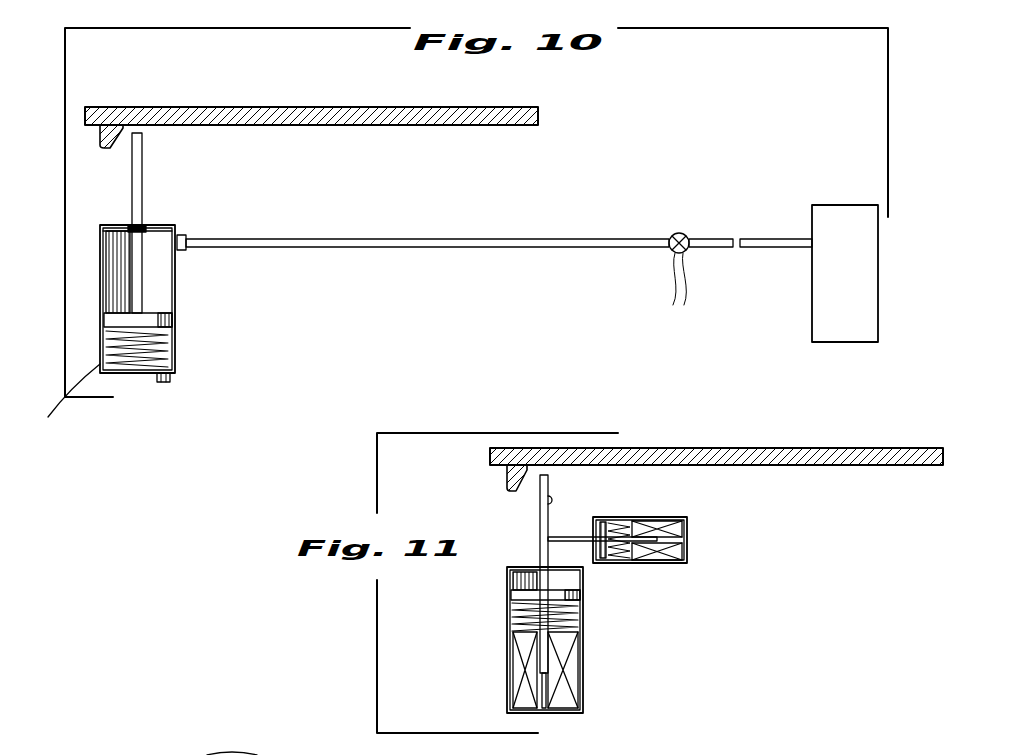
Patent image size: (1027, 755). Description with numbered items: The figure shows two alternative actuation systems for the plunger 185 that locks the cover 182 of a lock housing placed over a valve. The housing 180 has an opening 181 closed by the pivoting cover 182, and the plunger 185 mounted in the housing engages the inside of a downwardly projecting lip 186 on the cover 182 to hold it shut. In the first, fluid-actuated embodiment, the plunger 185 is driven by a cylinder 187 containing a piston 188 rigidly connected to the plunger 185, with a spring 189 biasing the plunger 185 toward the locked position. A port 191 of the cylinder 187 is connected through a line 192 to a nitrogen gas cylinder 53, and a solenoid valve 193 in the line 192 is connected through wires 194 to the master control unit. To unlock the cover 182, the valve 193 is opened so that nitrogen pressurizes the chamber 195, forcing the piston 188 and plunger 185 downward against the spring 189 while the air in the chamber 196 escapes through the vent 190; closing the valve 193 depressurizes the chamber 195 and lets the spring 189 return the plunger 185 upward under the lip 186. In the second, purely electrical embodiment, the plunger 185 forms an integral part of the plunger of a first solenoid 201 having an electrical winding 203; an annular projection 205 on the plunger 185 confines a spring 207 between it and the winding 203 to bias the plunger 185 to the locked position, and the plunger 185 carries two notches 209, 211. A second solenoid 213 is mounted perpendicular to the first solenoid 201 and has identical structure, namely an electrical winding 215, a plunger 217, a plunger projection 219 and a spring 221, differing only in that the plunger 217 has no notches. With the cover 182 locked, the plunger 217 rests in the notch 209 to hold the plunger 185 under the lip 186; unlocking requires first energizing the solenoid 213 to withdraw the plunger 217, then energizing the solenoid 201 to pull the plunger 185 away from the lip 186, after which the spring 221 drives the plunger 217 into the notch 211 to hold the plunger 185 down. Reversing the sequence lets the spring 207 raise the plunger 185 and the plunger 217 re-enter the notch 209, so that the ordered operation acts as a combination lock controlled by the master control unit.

In FIG. 10, the cover 182 is at (263, 106).
In FIG. 11, the cover 182 is at (765, 446).
In FIG. 10, the lip 186 is at (100, 130).
In FIG. 11, the lip 186 is at (507, 478).
In FIG. 10, the plunger 185 is at (143, 180).
In FIG. 11, the plunger 185 is at (540, 525).
In FIG. 10, the chamber 195 is at (115, 230).
In FIG. 10, the port 191 is at (177, 234).
In FIG. 10, the cylinder 187 is at (101, 285).
In FIG. 10, the piston 188 is at (157, 318).
In FIG. 10, the spring 189 is at (170, 348).
In FIG. 10, the vent 190 is at (165, 382).
In FIG. 10, the chamber 196 is at (59, 405).
In FIG. 10, the solenoid valve 193 is at (683, 234).
In FIG. 10, the line 192 is at (753, 238).
In FIG. 10, the N2 gas cylinder 53 is at (878, 285).
In FIG. 10, the wires 194 is at (690, 307).
In FIG. 11, the notch 211 is at (552, 500).
In FIG. 11, the notch 209 is at (550, 538).
In FIG. 11, the plunger projection 219 is at (608, 523).
In FIG. 11, the second solenoid 213 is at (683, 513).
In FIG. 11, the electrical winding 215 is at (677, 552).
In FIG. 11, the spring 221 is at (623, 547).
In FIG. 11, the plunger 217 is at (583, 547).
In FIG. 11, the annular projection 205 is at (517, 595).
In FIG. 11, the spring 207 is at (517, 623).
In FIG. 11, the first solenoid 201 is at (505, 677).
In FIG. 11, the electrical winding 203 is at (573, 682).
In FIG. 11, the housing 180 is at (110, 754).
In FIG. 11, the opening 181 is at (273, 754).